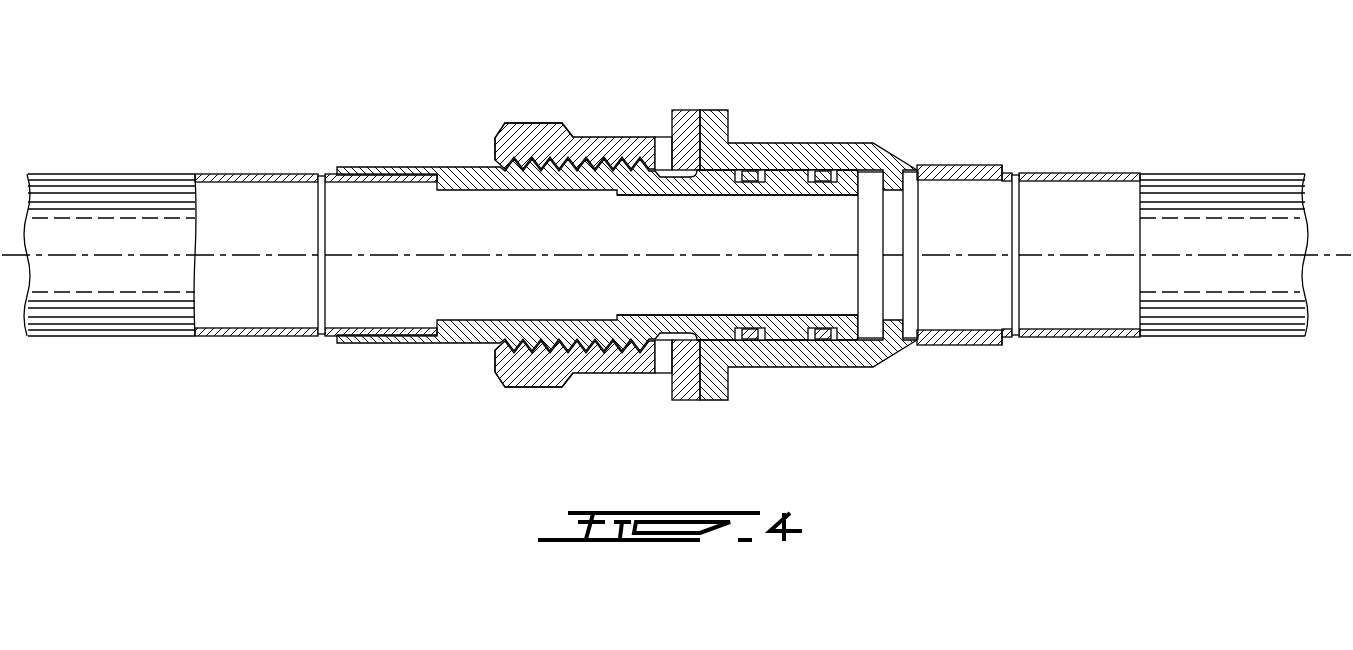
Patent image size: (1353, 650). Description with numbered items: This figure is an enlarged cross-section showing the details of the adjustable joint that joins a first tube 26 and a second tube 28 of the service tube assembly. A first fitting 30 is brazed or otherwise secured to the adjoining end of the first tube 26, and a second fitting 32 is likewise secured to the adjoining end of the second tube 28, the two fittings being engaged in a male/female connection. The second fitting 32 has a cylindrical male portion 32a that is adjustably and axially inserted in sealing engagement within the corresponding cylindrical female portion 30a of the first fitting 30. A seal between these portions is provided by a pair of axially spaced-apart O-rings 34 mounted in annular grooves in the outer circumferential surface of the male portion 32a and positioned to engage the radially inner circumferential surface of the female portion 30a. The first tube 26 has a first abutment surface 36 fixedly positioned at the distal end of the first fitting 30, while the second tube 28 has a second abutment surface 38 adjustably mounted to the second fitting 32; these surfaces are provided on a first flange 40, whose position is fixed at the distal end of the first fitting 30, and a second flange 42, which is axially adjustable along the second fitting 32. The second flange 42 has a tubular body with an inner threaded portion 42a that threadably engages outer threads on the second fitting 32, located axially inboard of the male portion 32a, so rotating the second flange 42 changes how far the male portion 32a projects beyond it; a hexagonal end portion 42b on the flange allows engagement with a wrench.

The first tube 26 is at (1222, 176).
The second tube 28 is at (110, 312).
The first fitting 30 is at (890, 150).
The female portion 30a is at (879, 341).
The second fitting 32 is at (443, 345).
The male portion 32a is at (773, 198).
The O-rings 34 is at (825, 341).
The first abutment surface 36 is at (688, 128).
The second abutment surface 38 is at (700, 401).
The first flange 40 is at (732, 111).
The second flange 42 is at (671, 382).
The threaded portion 42a is at (655, 140).
The hexagonal end portion 42b is at (520, 125).